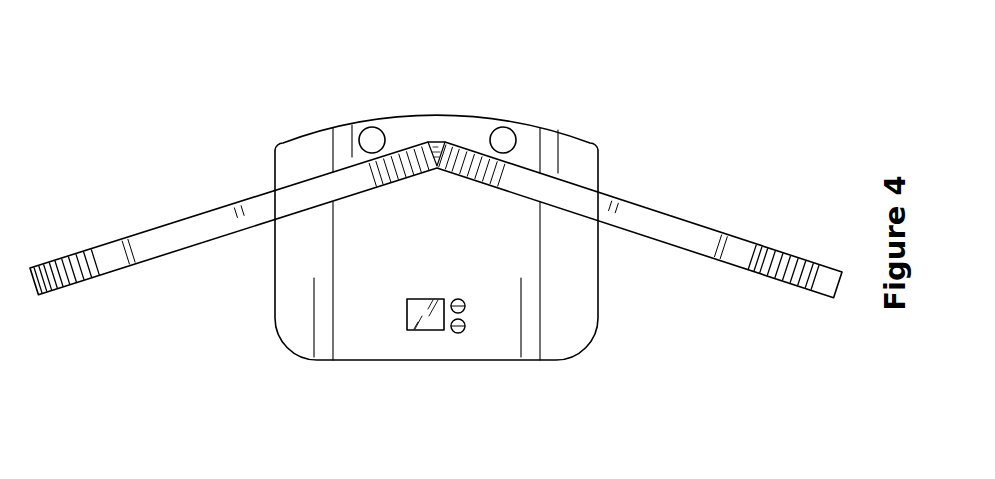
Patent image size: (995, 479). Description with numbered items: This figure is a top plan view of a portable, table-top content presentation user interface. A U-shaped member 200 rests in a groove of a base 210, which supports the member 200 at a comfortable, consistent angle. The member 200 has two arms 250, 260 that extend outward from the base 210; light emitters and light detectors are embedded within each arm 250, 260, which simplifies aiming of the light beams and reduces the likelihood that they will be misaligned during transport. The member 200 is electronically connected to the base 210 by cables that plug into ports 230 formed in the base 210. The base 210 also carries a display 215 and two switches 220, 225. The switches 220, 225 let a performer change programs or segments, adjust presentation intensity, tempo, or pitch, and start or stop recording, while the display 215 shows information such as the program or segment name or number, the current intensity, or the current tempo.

The U shaped member 200 is at (700, 232).
The base 210 is at (323, 363).
The display 215 is at (428, 331).
The switch 220 is at (459, 333).
The switch 225 is at (466, 312).
The ports 230 is at (495, 140).
The arm 250 is at (70, 253).
The arm 260 is at (385, 180).